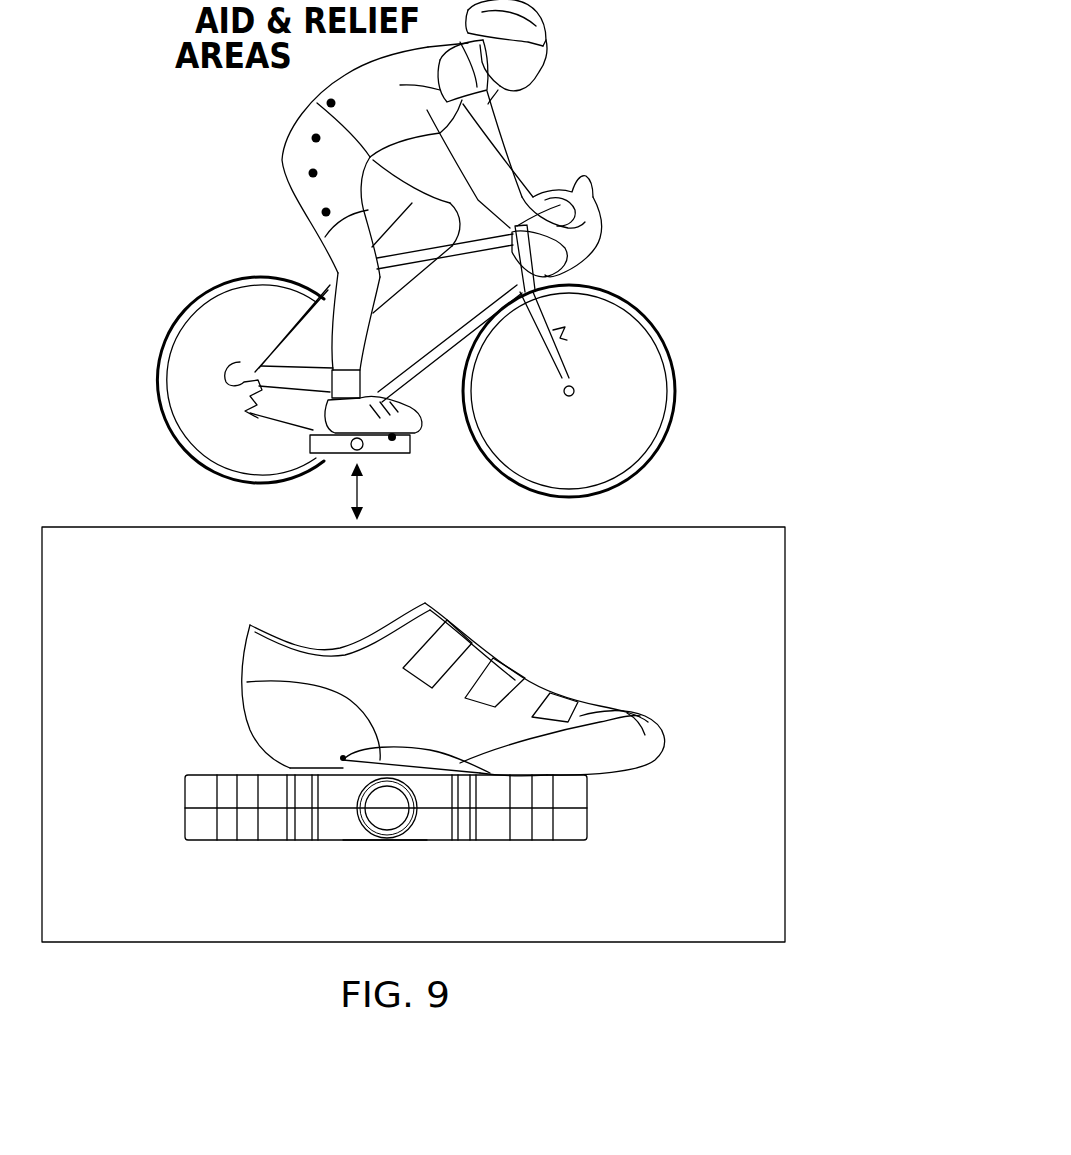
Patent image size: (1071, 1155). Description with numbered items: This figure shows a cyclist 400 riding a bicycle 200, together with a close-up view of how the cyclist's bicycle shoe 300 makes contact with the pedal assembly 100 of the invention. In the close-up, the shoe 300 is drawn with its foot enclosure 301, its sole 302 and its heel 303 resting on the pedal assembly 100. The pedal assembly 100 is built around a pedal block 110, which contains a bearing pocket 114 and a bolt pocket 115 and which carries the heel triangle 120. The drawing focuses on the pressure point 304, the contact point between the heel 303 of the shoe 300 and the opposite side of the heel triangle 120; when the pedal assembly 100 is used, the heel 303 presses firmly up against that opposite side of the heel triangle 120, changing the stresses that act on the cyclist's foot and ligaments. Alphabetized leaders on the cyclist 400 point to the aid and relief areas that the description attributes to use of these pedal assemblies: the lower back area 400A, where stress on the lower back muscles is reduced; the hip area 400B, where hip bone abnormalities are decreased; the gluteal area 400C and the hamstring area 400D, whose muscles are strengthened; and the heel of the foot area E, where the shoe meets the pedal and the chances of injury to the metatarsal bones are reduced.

The pedal assembly 100 is at (147, 811).
The pedal block 110 is at (578, 820).
The bearing pocket 114 is at (380, 818).
The bolt pocket 115 is at (387, 808).
The heel triangle 120 is at (357, 768).
The bicycle 200 is at (651, 278).
The bicycle shoe 300 is at (681, 727).
The foot enclosure 301 is at (410, 635).
The sole 302 is at (547, 773).
The heel 303 is at (300, 767).
The pressure point 304 is at (343, 756).
The cyclist 400 is at (658, 60).
The aid and relief area (lower back) 400A is at (326, 103).
The aid and relief area (hips) 400B is at (311, 138).
The aid and relief area (gluteal muscle) 400C is at (308, 173).
The aid and relief area (hamstring) 400D is at (321, 212).
The aid and relief area (heel of the foot) E is at (392, 437).